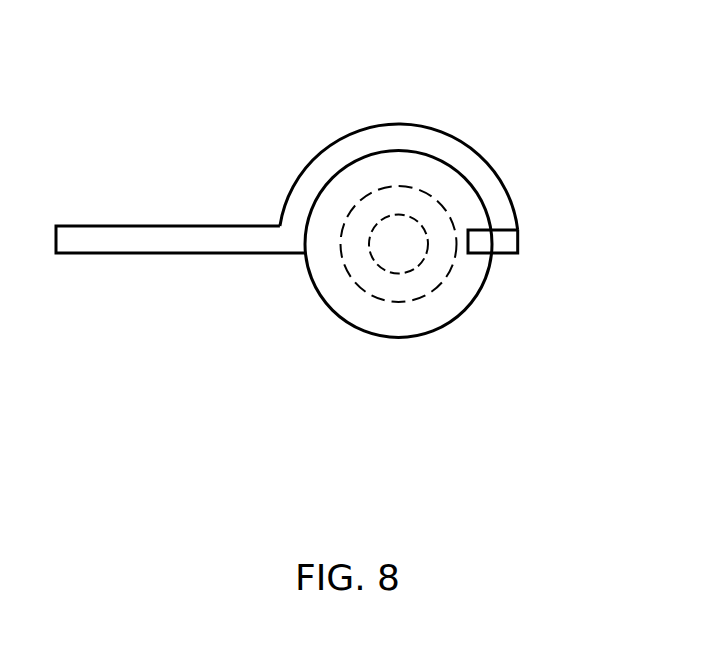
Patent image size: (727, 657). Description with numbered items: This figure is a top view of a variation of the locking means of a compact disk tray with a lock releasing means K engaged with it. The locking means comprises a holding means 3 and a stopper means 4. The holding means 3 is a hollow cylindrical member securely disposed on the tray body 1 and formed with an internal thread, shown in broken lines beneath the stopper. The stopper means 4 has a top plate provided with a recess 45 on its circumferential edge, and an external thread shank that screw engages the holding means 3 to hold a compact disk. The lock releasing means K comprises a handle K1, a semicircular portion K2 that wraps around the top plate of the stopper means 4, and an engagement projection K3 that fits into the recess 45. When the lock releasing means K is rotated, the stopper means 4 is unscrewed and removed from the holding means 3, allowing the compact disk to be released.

The tray body 1 is at (182, 141).
The lock releasing means K is at (346, 231).
The handle K1 is at (186, 243).
The semicircular portion K2 is at (353, 142).
The engagement projection K3 is at (477, 232).
The holding means 3 is at (398, 187).
The stopper means 4 is at (416, 342).
The recess 45 is at (482, 250).